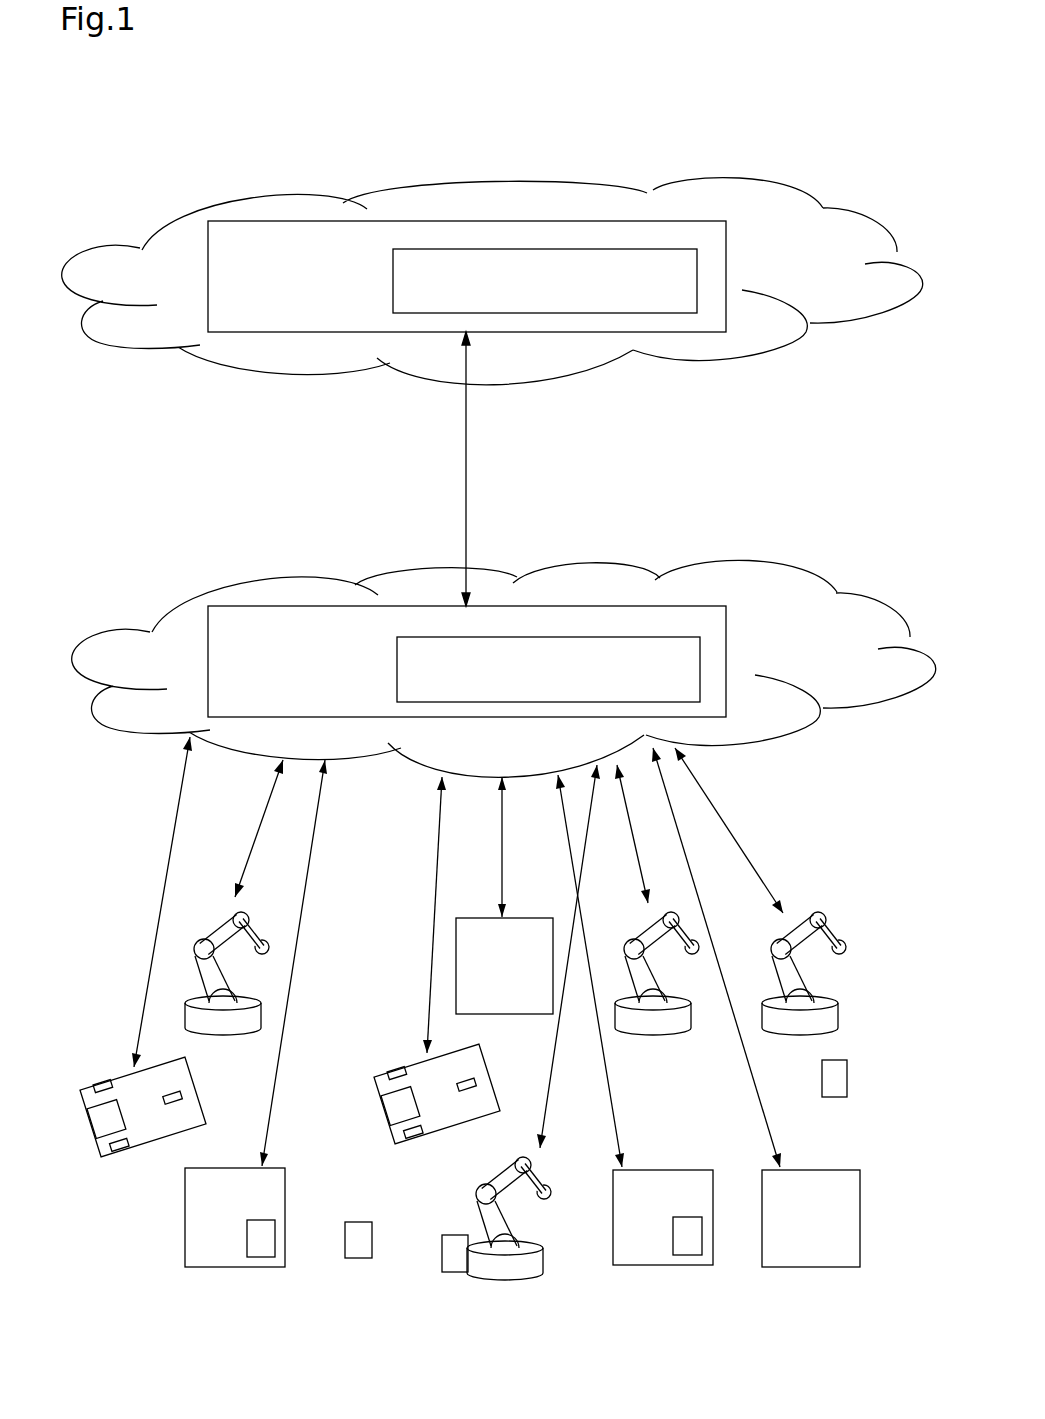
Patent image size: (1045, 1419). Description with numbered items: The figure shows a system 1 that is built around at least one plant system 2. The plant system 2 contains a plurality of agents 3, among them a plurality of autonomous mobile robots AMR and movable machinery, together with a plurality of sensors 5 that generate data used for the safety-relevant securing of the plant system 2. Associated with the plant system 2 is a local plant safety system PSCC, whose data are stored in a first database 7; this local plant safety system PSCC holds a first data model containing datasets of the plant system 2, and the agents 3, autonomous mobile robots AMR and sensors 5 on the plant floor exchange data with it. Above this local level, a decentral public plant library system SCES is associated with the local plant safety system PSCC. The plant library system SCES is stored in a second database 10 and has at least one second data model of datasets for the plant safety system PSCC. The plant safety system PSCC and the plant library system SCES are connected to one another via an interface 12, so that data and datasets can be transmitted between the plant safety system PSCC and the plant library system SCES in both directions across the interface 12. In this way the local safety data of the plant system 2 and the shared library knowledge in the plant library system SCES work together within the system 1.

The system 1 is at (827, 56).
The plant system 2 is at (98, 872).
The agents 3 is at (483, 1225).
The sensors 5 is at (260, 1258).
The first database 7 is at (262, 604).
The second database 10 is at (268, 219).
The interface 12 is at (470, 481).
The plant library system SCES is at (467, 247).
The local plant safety system PSCC is at (683, 636).
The autonomous mobile robots AMR is at (118, 1080).